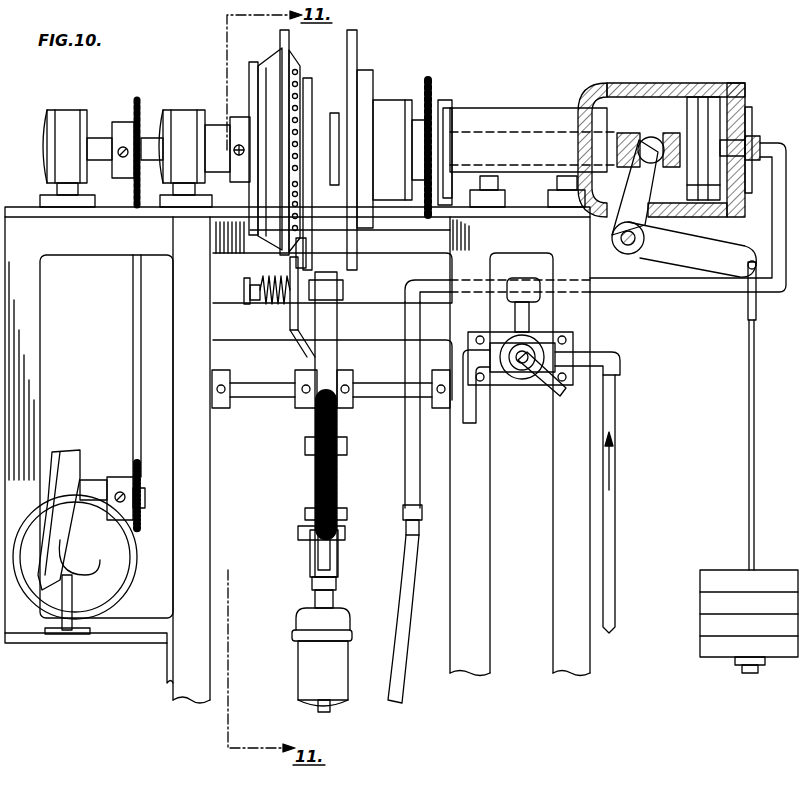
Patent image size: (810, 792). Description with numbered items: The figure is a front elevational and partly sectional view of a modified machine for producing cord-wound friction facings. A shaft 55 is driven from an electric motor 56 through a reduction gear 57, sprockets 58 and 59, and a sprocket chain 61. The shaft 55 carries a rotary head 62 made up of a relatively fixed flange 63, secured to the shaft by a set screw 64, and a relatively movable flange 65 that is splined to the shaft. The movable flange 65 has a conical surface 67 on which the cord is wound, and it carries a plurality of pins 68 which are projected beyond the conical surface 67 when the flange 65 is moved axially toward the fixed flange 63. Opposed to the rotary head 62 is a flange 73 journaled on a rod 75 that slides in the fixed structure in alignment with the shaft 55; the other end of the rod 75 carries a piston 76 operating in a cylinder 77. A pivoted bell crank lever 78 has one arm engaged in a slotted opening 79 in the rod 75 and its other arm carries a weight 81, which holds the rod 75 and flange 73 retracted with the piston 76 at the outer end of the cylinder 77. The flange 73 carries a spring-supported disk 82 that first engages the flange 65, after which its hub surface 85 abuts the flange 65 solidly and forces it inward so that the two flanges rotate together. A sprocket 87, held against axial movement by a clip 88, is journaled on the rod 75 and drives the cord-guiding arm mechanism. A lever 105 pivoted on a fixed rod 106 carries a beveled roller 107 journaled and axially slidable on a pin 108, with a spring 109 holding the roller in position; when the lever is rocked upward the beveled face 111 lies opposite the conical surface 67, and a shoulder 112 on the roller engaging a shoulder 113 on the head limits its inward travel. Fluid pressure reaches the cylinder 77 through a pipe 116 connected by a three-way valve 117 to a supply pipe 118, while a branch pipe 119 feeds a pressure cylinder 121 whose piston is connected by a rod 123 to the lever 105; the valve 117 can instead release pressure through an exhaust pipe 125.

The shaft 55 is at (146, 142).
The electric motor 56 is at (105, 580).
The reduction gear 57 is at (68, 452).
The sprocket 58 is at (143, 480).
The sprocket 59 is at (137, 100).
The sprocket chain 61 is at (133, 303).
The rotary head 62 is at (272, 62).
The relatively fixed flange 63 is at (250, 68).
The set screw 64 is at (238, 160).
The relatively movable flange 65 is at (308, 90).
The conical surface 67 is at (296, 66).
The pins 68 is at (300, 189).
The flange 73 is at (355, 58).
The rod 75 is at (590, 145).
The piston 76 is at (712, 105).
The cylinder 77 is at (745, 100).
The bell crank lever 78 is at (690, 255).
The slotted opening 79 is at (638, 140).
The weight 81 is at (712, 575).
The disk 82 is at (340, 143).
The hub surface 85 is at (333, 125).
The sprocket 87 is at (428, 85).
The clip 88 is at (455, 100).
The lever 105 is at (328, 483).
The rod 106 is at (253, 392).
The beveled roller 107 is at (333, 290).
The pin 108 is at (252, 290).
The spring 109 is at (262, 282).
The beveled face 111 is at (296, 258).
The shoulder 112 is at (312, 355).
The shoulder 113 is at (285, 52).
The pipe 116 is at (675, 292).
The valve 117 is at (527, 376).
The supply pipe 118 is at (617, 395).
The branch pipe 119 is at (410, 427).
The pressure cylinder 121 is at (315, 665).
The rod 123 is at (330, 706).
The exhaust pipe 125 is at (470, 425).